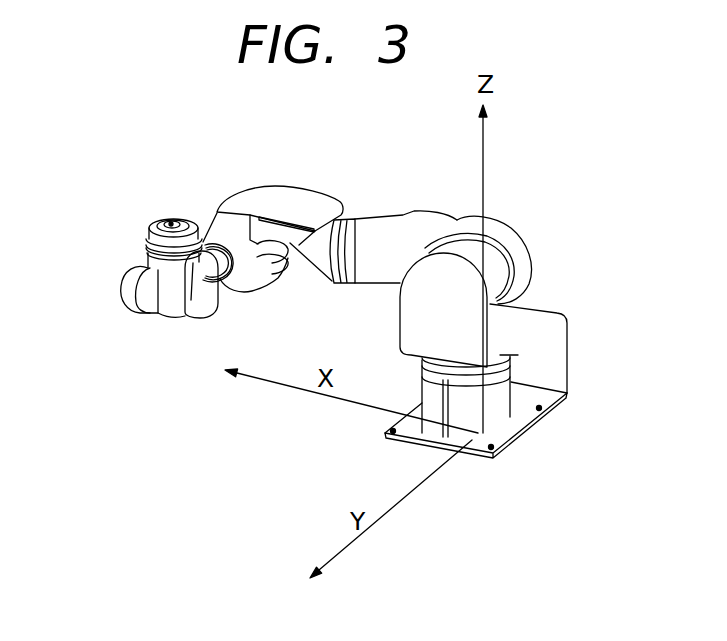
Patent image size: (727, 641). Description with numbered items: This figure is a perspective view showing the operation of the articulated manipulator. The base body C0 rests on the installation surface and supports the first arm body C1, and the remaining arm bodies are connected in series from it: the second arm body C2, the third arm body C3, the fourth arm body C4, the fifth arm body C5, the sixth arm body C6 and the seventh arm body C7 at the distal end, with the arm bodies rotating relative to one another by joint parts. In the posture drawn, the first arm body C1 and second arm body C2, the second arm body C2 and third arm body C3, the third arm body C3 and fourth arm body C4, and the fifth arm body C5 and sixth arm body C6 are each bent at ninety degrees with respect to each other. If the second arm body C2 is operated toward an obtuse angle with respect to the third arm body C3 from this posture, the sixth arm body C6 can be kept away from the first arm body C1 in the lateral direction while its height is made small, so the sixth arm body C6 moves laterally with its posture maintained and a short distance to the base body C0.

The base body C0 is at (498, 398).
The first arm body C1 is at (465, 320).
The second arm body C2 is at (415, 228).
The third arm body C3 is at (286, 205).
The fourth arm body C4 is at (262, 285).
The fifth arm body C5 is at (126, 288).
The sixth arm body C6 is at (200, 312).
The seventh arm body C7 is at (166, 218).